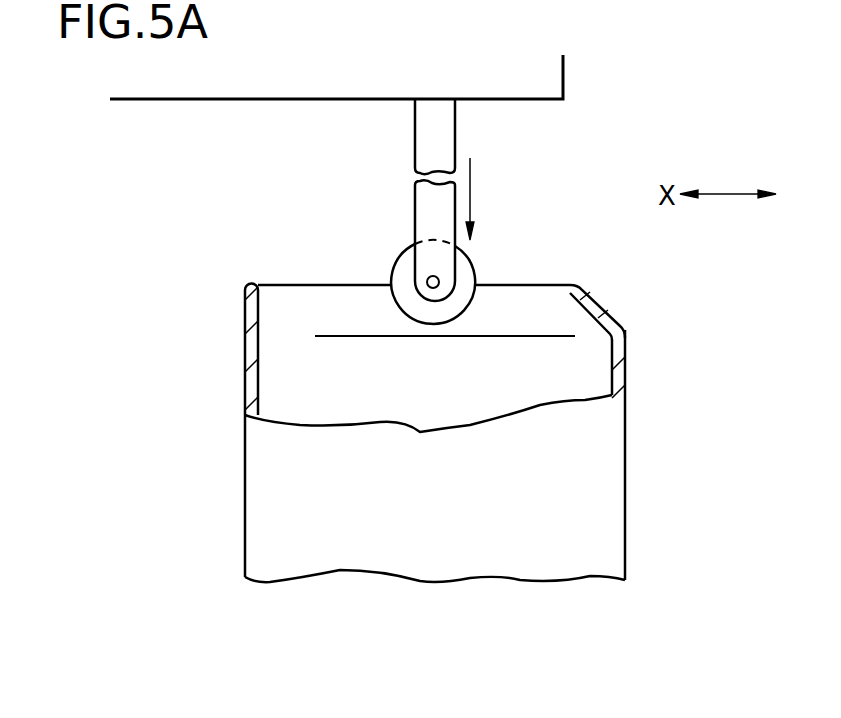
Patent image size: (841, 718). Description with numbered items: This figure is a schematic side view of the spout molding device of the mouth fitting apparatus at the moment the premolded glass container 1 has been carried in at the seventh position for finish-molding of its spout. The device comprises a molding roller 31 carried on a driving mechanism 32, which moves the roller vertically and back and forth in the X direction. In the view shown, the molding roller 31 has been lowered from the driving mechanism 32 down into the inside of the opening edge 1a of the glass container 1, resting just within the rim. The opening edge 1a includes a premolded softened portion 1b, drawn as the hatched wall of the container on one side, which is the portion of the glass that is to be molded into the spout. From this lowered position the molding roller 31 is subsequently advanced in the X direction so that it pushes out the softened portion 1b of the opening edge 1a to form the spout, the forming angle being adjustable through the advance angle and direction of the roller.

The glass container 1 is at (613, 491).
The opening edge 1a is at (594, 301).
The softened portion 1b is at (245, 300).
The molding roller 31 is at (463, 262).
The driving mechanism 32 is at (563, 75).